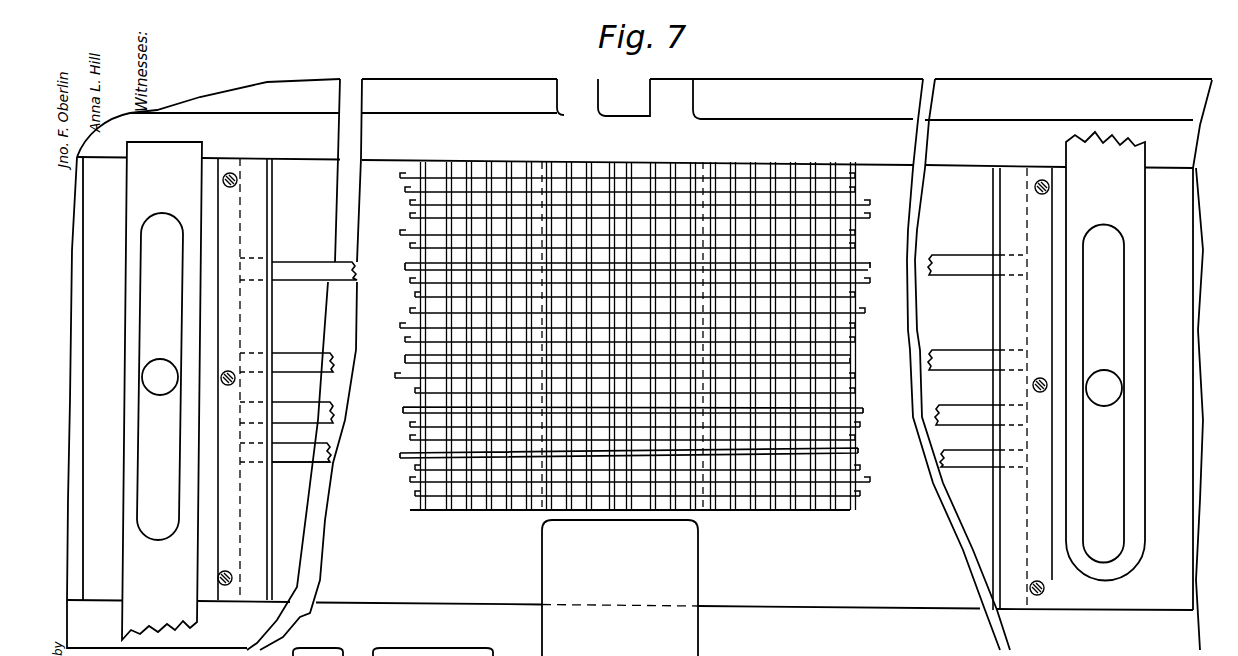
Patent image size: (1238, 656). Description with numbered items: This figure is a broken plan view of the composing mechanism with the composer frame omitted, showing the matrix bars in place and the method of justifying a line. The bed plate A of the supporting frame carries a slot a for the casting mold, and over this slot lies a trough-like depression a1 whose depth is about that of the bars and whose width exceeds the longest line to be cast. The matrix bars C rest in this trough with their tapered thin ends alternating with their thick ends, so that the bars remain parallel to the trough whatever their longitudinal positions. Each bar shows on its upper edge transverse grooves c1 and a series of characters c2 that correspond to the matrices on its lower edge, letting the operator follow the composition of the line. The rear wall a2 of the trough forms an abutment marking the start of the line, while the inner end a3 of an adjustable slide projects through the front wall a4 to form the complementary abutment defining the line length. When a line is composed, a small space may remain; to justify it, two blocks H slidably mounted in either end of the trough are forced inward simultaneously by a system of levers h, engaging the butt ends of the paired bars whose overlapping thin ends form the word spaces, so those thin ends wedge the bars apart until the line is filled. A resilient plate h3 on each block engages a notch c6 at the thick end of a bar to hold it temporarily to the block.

The bed plate A is at (393, 82).
The slot a is at (705, 215).
The trough-like depression a1 is at (630, 582).
The rear wall a2 is at (675, 167).
The inner end a3 is at (698, 545).
The front wall a4 is at (490, 601).
The matrix bars C is at (870, 197).
The transverse grooves c1 is at (497, 518).
The characters c2 is at (590, 170).
The notch c6 is at (274, 452).
The blocks H is at (208, 242).
The levers h is at (135, 203).
The resilient plate h3 is at (270, 323).